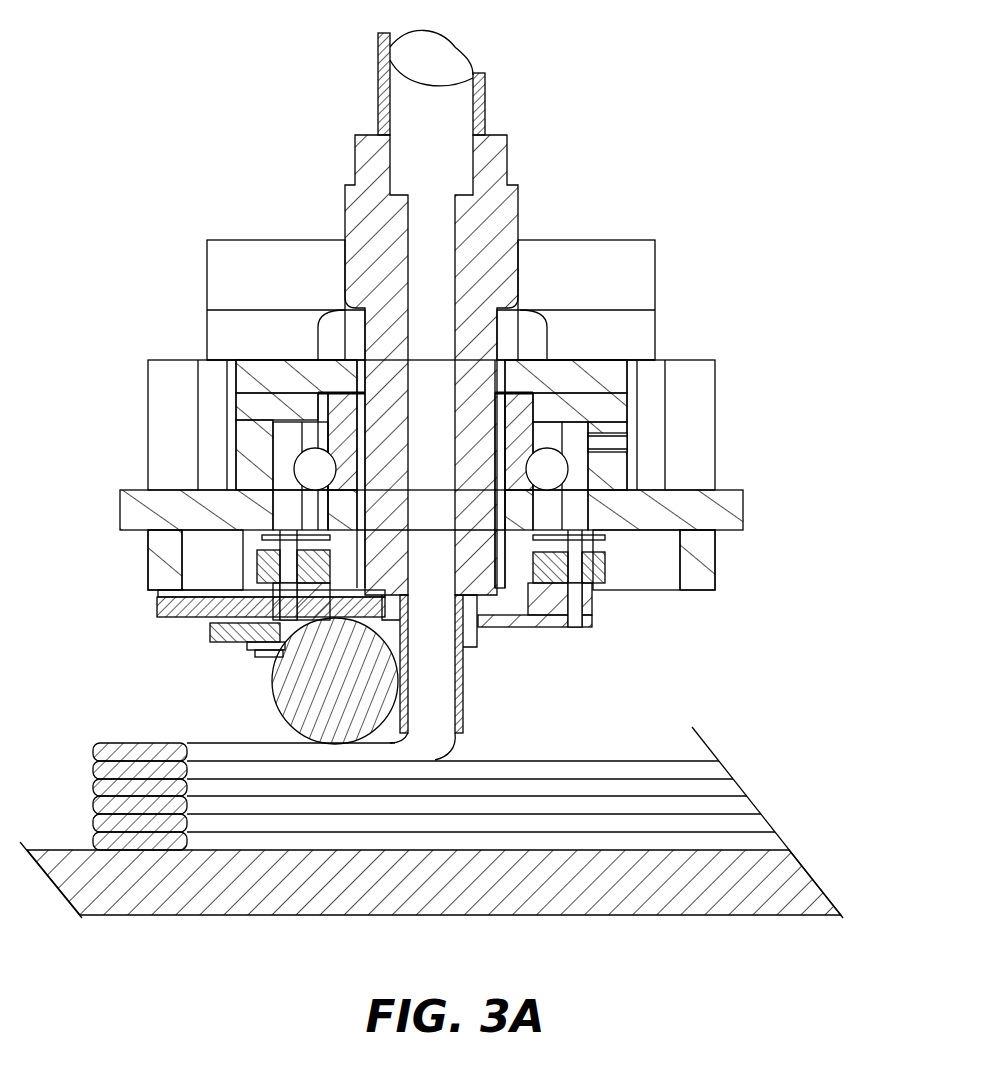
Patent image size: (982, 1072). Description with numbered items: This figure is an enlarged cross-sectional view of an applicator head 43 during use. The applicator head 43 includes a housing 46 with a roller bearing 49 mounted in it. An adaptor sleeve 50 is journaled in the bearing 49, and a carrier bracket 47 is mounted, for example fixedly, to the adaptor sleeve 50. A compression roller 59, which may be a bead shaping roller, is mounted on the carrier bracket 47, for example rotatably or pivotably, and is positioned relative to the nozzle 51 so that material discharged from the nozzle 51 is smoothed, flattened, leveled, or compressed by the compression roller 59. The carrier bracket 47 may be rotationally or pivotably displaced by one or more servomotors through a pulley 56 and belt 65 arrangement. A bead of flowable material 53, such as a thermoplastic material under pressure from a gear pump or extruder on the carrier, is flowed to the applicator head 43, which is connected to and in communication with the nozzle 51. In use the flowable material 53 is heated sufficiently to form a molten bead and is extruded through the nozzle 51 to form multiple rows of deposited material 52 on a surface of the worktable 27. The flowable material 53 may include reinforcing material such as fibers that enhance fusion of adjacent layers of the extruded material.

The worktable 27 is at (575, 915).
The applicator head 43 is at (733, 431).
The housing 46 is at (153, 420).
The carrier bracket 47 is at (157, 612).
The roller bearing 49 is at (577, 433).
The adaptor sleeve 50 is at (518, 495).
The nozzle 51 is at (355, 165).
The deposited material 52 is at (620, 762).
The flowable material 53 is at (472, 40).
The pulley 56 is at (595, 585).
The compression roller 59 is at (272, 694).
The belt 65 is at (607, 565).